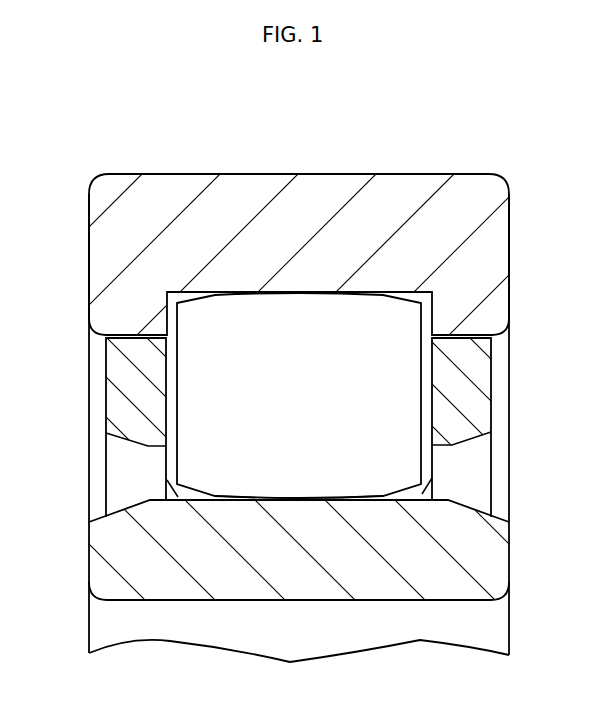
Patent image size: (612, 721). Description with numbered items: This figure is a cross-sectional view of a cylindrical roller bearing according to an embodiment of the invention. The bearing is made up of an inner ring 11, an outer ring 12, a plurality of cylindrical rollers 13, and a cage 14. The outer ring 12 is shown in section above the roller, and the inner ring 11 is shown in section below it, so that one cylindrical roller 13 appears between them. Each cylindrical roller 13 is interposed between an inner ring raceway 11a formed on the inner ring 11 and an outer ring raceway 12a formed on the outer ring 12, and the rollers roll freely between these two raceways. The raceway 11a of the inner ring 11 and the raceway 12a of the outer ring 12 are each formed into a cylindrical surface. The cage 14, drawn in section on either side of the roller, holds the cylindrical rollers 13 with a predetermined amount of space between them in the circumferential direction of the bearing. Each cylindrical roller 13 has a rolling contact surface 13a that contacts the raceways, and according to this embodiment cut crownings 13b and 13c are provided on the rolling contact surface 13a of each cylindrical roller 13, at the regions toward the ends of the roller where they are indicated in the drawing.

The inner ring 11 is at (480, 562).
The inner ring raceway 11a is at (272, 500).
The outer ring 12 is at (395, 196).
The outer ring raceway 12a is at (304, 293).
The cylindrical roller 13 is at (395, 417).
The rolling contact surface 13a is at (343, 498).
The cut crowning 13b is at (432, 497).
The cut crowning 13c is at (177, 494).
The cage 14 is at (473, 365).